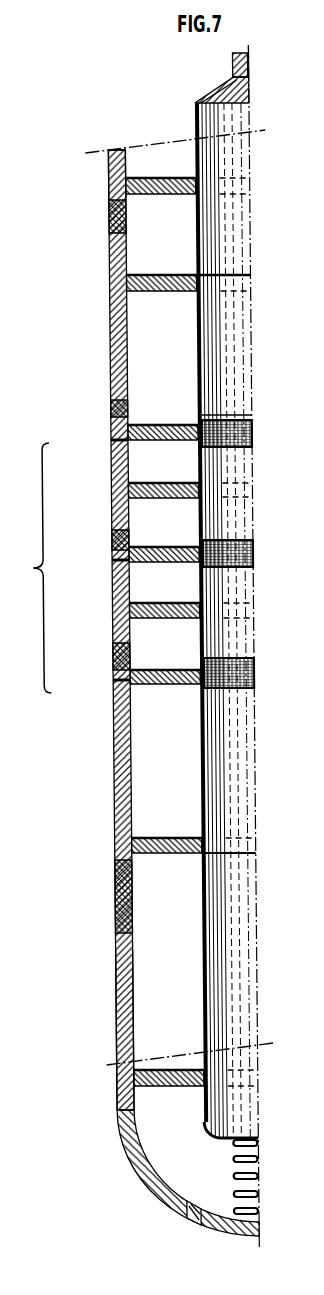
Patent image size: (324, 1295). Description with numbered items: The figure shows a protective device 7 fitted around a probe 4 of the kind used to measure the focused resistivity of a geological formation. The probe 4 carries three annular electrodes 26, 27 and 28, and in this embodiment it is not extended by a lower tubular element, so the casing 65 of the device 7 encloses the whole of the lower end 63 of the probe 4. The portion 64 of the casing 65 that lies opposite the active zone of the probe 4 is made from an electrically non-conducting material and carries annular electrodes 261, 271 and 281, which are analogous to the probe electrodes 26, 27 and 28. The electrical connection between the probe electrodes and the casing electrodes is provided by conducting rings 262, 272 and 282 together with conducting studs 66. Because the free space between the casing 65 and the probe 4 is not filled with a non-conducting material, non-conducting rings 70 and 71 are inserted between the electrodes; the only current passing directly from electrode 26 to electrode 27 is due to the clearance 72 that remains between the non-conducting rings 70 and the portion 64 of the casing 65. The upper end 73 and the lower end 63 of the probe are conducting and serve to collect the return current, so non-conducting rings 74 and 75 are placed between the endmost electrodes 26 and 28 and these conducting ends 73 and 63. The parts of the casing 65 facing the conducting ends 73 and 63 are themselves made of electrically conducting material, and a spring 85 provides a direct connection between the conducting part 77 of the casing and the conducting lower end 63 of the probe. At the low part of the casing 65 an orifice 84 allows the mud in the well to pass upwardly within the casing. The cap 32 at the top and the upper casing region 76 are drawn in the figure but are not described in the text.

The probe 4 is at (186, 772).
The protective device 7 is at (60, 240).
The annular electrode 26 is at (239, 427).
The annular electrode 27 is at (242, 553).
The annular electrode 28 is at (244, 670).
The cap 32 is at (247, 65).
The lower end of probe 63 is at (195, 1124).
The portion of casing 64 is at (166, 568).
The casing 65 is at (97, 910).
The conducting studs 66 is at (107, 405).
The non-conducting ring 70 is at (166, 483).
The non-conducting ring 71 is at (155, 603).
The clearance 72 is at (124, 476).
The upper end of probe 73 is at (232, 163).
The non-conducting ring 74 is at (157, 275).
The non-conducting ring 75 is at (147, 838).
The upper end of outer wall 76 is at (107, 173).
The conducting part of casing 77 is at (107, 1012).
The orifice 84 is at (179, 1215).
The spring 85 is at (232, 1172).
The annular electrode 261 is at (108, 440).
The conducting ring 262 is at (169, 425).
The annular electrode 271 is at (112, 560).
The conducting ring 272 is at (157, 547).
The annular electrode 281 is at (109, 680).
The conducting ring 282 is at (161, 670).